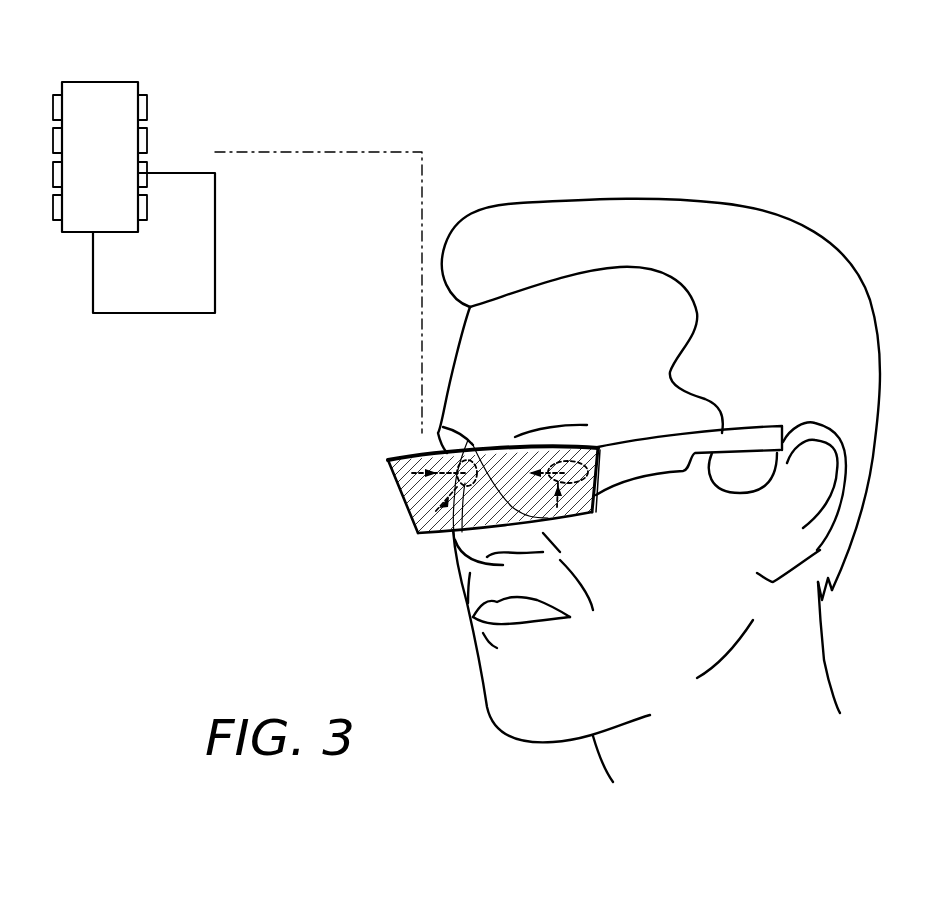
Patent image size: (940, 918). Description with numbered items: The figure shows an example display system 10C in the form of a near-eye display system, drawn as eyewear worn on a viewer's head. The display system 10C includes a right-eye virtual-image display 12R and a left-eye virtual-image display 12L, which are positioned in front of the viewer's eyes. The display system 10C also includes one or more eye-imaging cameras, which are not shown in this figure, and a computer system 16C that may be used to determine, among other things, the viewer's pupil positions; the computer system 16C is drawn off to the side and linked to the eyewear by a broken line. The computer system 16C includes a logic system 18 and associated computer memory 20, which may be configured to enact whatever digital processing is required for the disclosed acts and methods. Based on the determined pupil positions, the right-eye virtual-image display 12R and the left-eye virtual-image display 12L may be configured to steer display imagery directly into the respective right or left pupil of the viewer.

The display system 10C is at (372, 492).
The right-eye virtual-image display 12R is at (418, 503).
The left-eye virtual-image display 12L is at (577, 502).
The computer system 16C is at (232, 122).
The logic system 18 is at (165, 254).
The computer memory 20 is at (112, 167).